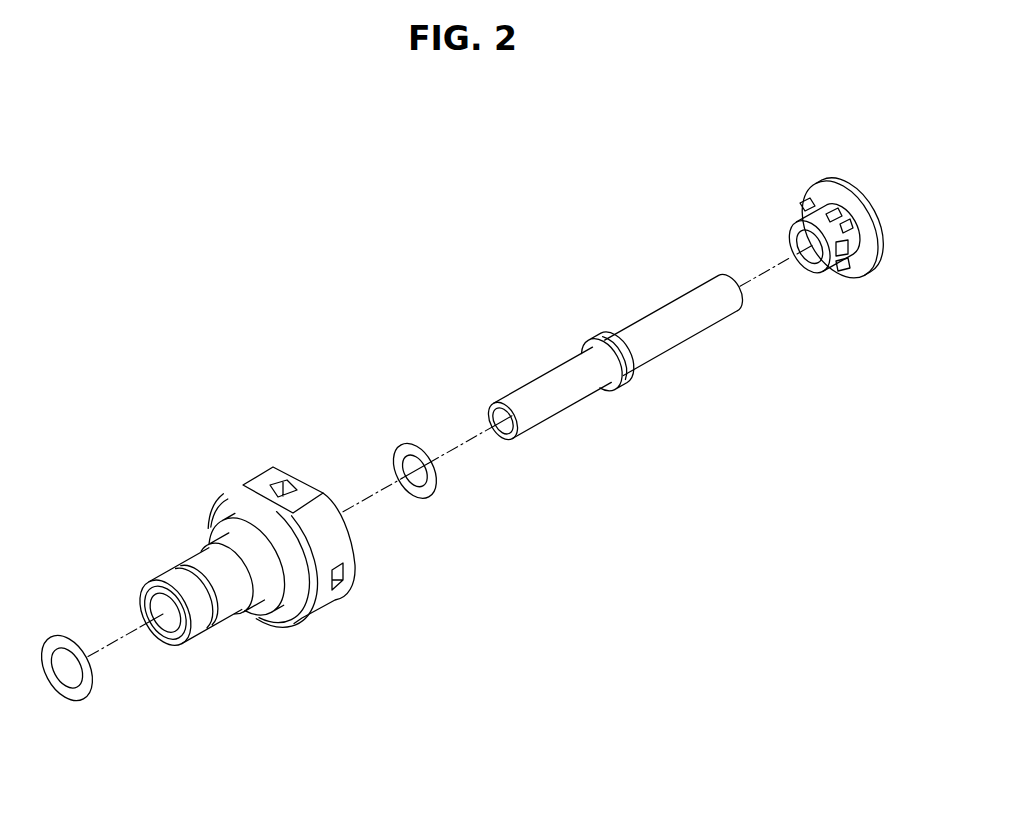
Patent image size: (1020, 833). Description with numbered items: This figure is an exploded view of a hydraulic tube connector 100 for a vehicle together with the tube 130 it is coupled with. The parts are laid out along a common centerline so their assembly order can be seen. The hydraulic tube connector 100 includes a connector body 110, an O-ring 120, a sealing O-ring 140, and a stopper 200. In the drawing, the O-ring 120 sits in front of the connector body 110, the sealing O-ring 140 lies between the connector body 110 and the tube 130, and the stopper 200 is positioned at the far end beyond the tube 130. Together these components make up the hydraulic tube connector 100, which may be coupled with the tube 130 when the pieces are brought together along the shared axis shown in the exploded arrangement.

The hydraulic tube connector 100 is at (117, 322).
The connector body 110 is at (272, 471).
The O-ring 120 is at (60, 641).
The tube 130 is at (527, 392).
The sealing O-ring 140 is at (408, 445).
The stopper 200 is at (838, 178).